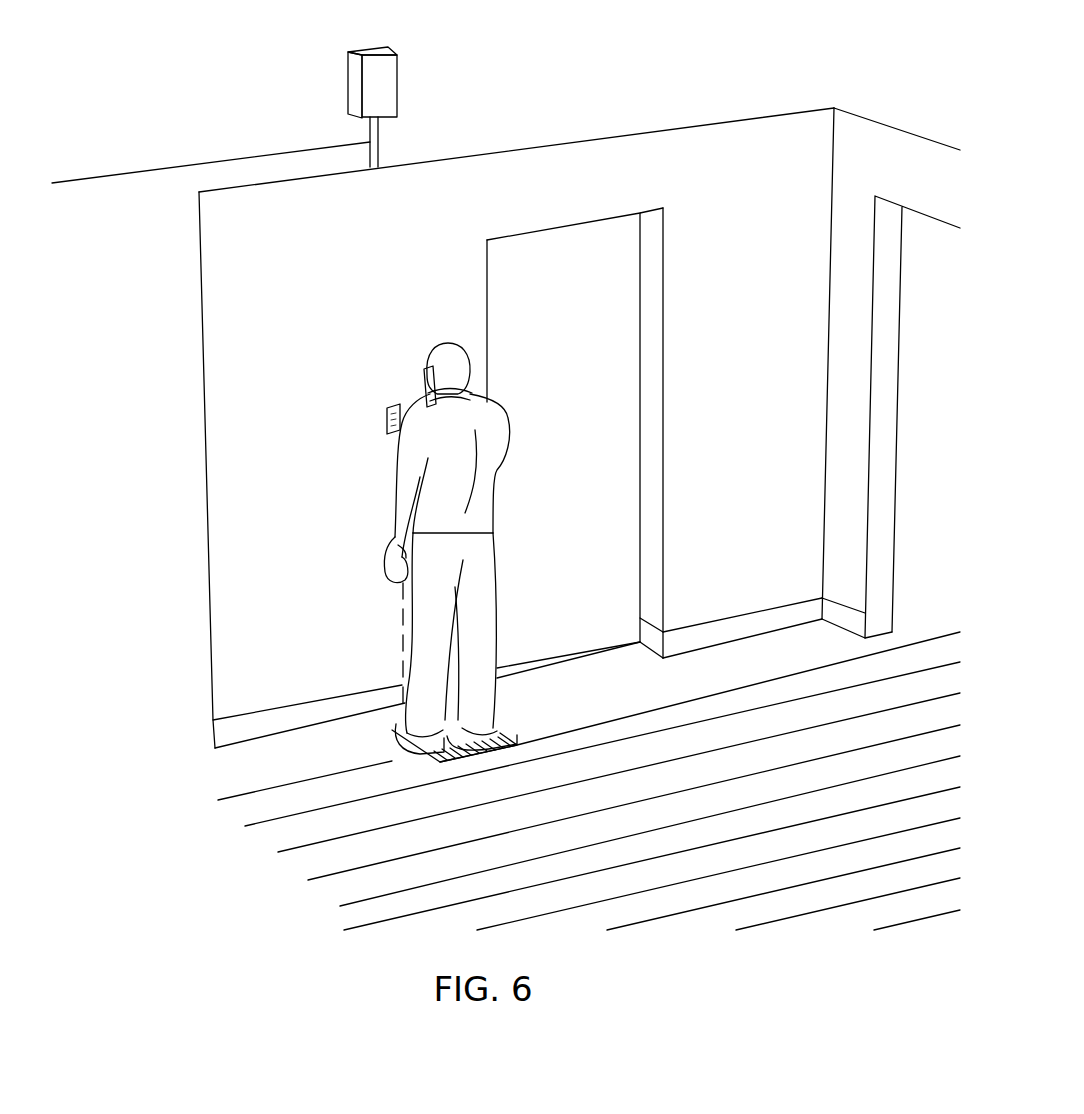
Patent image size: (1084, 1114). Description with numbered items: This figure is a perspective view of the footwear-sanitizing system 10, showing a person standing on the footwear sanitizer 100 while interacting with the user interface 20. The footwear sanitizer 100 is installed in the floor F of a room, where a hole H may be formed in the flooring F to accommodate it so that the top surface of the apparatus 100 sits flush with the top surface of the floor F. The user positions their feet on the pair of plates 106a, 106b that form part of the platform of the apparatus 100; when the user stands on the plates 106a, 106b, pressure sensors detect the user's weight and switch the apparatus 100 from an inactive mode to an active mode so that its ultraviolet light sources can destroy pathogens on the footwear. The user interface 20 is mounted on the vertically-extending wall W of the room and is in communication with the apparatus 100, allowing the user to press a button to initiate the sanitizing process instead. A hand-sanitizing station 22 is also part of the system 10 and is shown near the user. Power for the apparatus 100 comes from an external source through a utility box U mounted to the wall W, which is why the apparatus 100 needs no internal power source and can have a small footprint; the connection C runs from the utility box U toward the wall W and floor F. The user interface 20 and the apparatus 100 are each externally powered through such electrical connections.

The footwear-sanitizing system 10 is at (459, 233).
The user interface 20 is at (387, 408).
The hand-sanitizing station 22 is at (424, 385).
The footwear sanitizer 100 is at (516, 800).
The plate 106a is at (457, 750).
The plate 106b is at (510, 737).
The utility box U is at (385, 82).
The conduit / cable C is at (378, 150).
The wall W is at (232, 355).
The hole H is at (392, 730).
The floor F is at (300, 777).